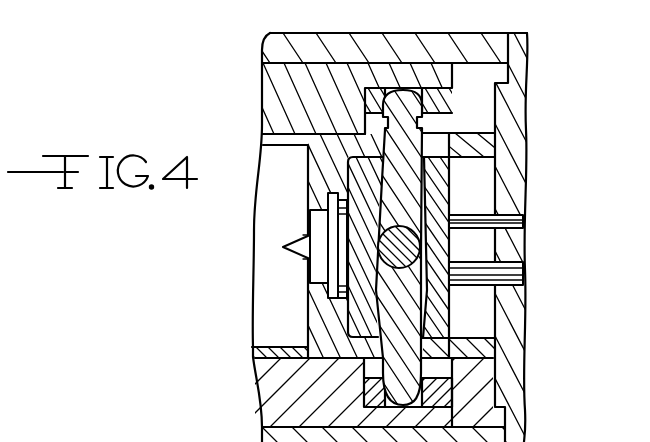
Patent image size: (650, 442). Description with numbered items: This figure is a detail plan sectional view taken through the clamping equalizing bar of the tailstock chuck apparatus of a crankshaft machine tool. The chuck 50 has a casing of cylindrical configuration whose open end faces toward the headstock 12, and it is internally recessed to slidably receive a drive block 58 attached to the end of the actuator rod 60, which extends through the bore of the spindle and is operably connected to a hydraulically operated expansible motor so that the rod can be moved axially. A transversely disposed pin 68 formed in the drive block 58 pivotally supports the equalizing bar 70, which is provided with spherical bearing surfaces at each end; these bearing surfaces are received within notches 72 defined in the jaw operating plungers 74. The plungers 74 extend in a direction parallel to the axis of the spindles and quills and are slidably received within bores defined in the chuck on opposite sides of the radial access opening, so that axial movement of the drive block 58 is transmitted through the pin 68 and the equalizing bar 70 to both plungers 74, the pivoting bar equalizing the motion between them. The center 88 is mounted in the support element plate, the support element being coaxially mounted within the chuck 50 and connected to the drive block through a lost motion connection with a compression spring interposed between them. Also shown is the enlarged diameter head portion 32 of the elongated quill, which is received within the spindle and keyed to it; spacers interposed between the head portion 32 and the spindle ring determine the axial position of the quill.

The headstock structure 12 is at (85, 441).
The head portion 32 is at (510, 197).
The chuck 50 is at (292, 42).
The drive block 58 is at (420, 311).
The actuator rod 60 is at (497, 228).
The pin 68 is at (405, 249).
The equalizing bar 70 is at (405, 175).
The notches 72 is at (420, 94).
The jaw operating plungers 74 is at (288, 97).
The center 88 is at (290, 242).